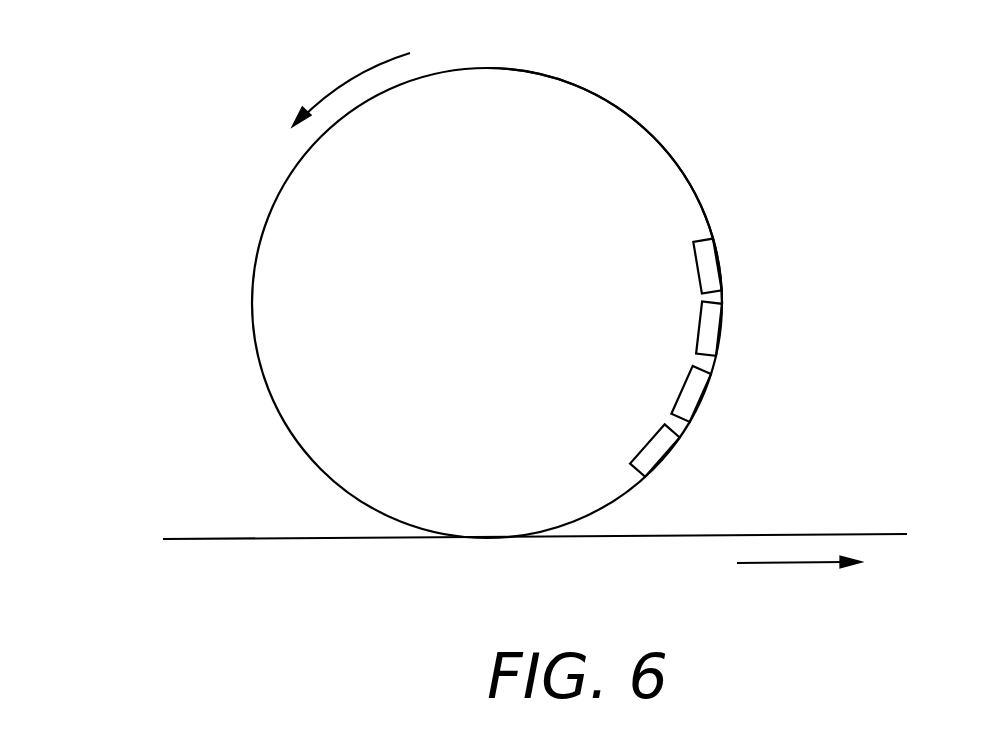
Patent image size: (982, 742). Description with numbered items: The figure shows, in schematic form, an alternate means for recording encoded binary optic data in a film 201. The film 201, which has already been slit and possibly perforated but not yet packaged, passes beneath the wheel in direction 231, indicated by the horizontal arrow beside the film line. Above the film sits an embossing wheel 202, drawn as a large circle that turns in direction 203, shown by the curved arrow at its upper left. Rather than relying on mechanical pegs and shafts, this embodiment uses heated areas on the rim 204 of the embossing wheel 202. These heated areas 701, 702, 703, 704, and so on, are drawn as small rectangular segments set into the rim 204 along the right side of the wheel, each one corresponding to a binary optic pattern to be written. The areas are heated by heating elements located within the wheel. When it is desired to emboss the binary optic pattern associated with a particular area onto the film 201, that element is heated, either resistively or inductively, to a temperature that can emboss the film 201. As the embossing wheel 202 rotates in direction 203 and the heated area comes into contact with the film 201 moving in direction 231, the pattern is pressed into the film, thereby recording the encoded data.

The embossing wheel 202 is at (210, 283).
The radial shaft 203 is at (362, 68).
The rim 204 is at (660, 142).
The heated area 701 is at (710, 260).
The heated area 702 is at (707, 335).
The heated area 703 is at (693, 400).
The heated area 704 is at (660, 455).
The film 201 is at (212, 540).
The direction 231 is at (775, 563).